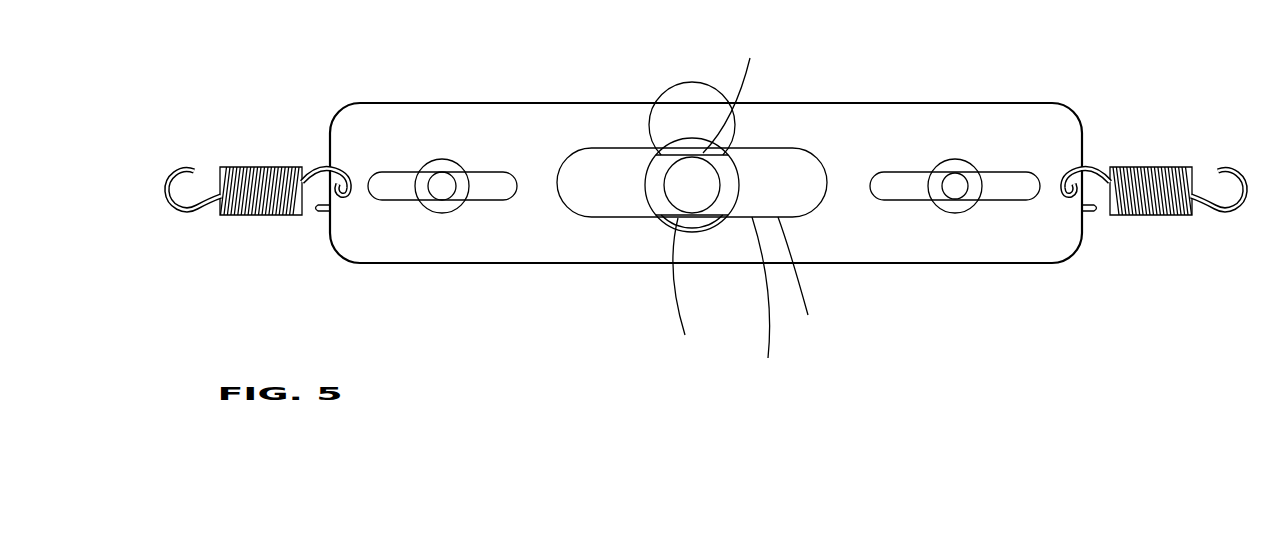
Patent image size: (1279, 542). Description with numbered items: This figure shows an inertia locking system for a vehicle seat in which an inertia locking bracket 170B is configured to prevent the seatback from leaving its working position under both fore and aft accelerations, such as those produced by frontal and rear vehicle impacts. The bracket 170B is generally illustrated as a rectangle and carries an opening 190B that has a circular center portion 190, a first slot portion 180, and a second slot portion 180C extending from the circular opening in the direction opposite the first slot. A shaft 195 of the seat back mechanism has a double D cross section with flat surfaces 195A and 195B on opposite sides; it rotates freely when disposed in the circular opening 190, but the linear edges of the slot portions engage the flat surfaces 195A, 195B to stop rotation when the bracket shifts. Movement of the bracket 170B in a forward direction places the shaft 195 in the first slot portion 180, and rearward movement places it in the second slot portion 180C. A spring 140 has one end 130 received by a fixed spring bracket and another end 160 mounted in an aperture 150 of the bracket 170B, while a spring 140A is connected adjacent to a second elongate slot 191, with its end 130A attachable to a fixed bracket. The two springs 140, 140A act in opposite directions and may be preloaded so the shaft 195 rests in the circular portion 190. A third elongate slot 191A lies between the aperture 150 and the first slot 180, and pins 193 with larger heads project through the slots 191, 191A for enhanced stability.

The spring end 130 is at (180, 169).
The spring end 130A is at (1224, 169).
The spring 140 is at (280, 168).
The spring 140A is at (1165, 168).
The aperture 150 is at (353, 186).
The spring end 160 is at (318, 214).
The inertia locking bracket 170B is at (465, 263).
The first slot portion 180 is at (603, 217).
The second slot portion 180C is at (809, 281).
The circular opening 190 is at (693, 232).
The opening 190B is at (768, 301).
The second elongate slot 191 is at (905, 172).
The third elongate slot 191A is at (400, 172).
The pin 193 is at (447, 180).
The shaft 195 is at (697, 182).
The flat surface 195A is at (744, 94).
The flat surface 195B is at (687, 291).